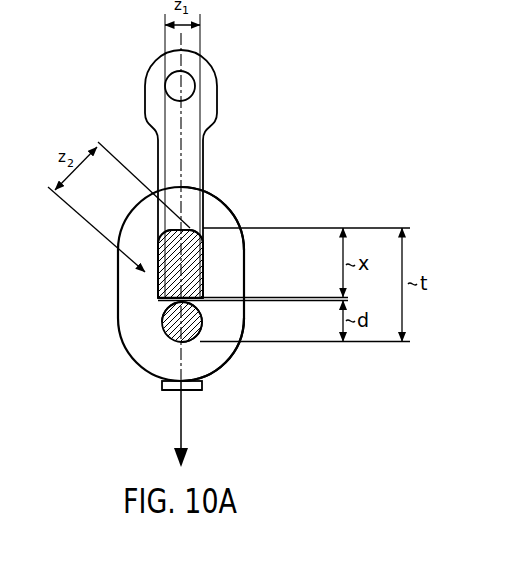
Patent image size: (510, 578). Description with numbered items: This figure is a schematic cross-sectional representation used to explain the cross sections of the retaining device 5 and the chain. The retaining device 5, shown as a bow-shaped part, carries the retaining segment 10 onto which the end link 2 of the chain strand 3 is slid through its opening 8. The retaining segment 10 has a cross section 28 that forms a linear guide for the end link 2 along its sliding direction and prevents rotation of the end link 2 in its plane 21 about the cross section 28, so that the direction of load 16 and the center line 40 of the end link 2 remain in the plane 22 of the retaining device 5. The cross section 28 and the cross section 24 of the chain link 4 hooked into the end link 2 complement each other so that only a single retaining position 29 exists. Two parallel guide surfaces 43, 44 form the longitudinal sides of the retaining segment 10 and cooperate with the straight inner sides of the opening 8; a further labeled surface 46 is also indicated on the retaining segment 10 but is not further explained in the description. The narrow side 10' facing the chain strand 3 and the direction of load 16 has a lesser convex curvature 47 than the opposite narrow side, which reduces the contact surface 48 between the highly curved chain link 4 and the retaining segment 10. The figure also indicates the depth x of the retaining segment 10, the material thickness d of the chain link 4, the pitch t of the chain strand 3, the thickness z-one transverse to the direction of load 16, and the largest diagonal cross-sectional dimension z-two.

The end link 2 is at (141, 352).
The chain strand 3 is at (213, 403).
The chain link 4 is at (190, 392).
The retaining device 5 is at (228, 72).
The opening 8 is at (158, 306).
The retaining segment 10 is at (234, 264).
The narrow side 10' is at (122, 330).
The direction of load 16 is at (178, 432).
The plane 21 is at (129, 322).
The plane 22 is at (178, 162).
The cross section 24 is at (200, 340).
The cross section 28 is at (234, 264).
The retaining position 29 is at (268, 178).
The center line 40 is at (164, 368).
The guide surface 43 is at (205, 295).
The guide surface 44 is at (208, 258).
The top face 46 is at (203, 231).
The lesser convex curvature 47 is at (208, 302).
The contact surface 48 is at (203, 306).